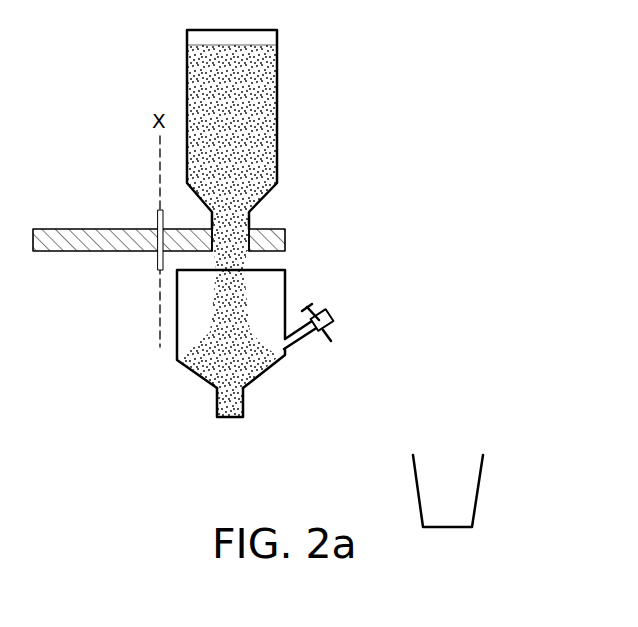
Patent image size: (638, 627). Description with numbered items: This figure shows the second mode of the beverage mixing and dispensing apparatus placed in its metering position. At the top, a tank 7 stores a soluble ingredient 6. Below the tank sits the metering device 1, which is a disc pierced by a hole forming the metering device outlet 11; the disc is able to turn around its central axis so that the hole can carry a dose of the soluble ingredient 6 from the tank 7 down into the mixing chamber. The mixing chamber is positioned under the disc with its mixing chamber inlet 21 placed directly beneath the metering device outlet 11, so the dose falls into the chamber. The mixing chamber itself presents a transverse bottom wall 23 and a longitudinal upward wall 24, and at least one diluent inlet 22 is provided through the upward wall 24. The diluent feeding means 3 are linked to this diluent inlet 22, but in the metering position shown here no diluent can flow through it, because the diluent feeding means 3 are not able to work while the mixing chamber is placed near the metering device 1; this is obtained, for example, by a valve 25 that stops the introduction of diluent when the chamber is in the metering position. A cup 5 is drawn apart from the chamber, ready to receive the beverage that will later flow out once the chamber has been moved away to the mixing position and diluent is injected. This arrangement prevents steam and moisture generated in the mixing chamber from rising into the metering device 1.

The metering device 1 is at (50, 228).
The diluent feeding means 3 is at (342, 324).
The cup 5 is at (480, 473).
The soluble ingredient 6 is at (268, 110).
The tank 7 is at (277, 40).
The metering device outlet 11 is at (272, 240).
The mixing chamber inlet 21 is at (222, 271).
The diluent inlet 22 is at (285, 343).
The transverse bottom wall 23 is at (197, 379).
The longitudinal upward wall 24 is at (285, 278).
The valve 25 is at (332, 341).